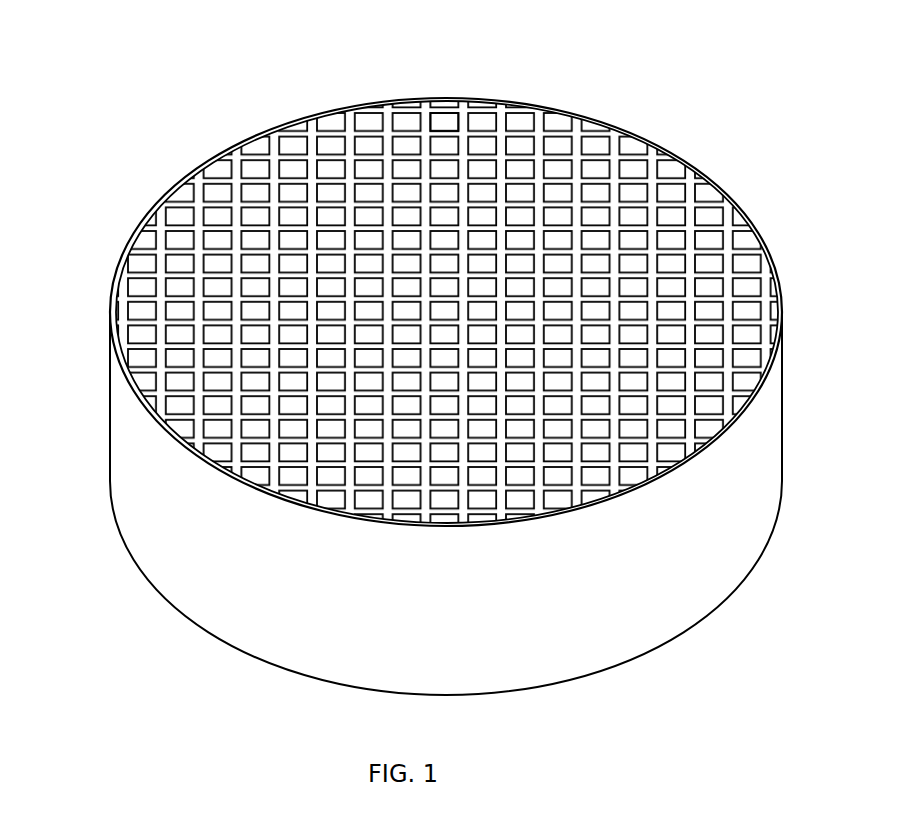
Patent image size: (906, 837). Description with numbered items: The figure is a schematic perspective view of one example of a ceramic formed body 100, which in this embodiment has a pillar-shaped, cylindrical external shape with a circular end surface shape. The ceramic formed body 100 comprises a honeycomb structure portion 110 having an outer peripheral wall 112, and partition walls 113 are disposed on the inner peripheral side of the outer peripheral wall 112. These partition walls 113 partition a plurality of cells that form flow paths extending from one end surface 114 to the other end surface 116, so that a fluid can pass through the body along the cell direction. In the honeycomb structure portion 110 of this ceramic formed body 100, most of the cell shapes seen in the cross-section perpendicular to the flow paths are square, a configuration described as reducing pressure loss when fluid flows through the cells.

The ceramic formed body 100 is at (408, 368).
The honeycomb structure portion 110 is at (110, 258).
The outer peripheral wall 112 is at (148, 212).
The partition walls 113 is at (463, 118).
The one end surface 114 is at (230, 156).
The other end surface 116 is at (218, 636).